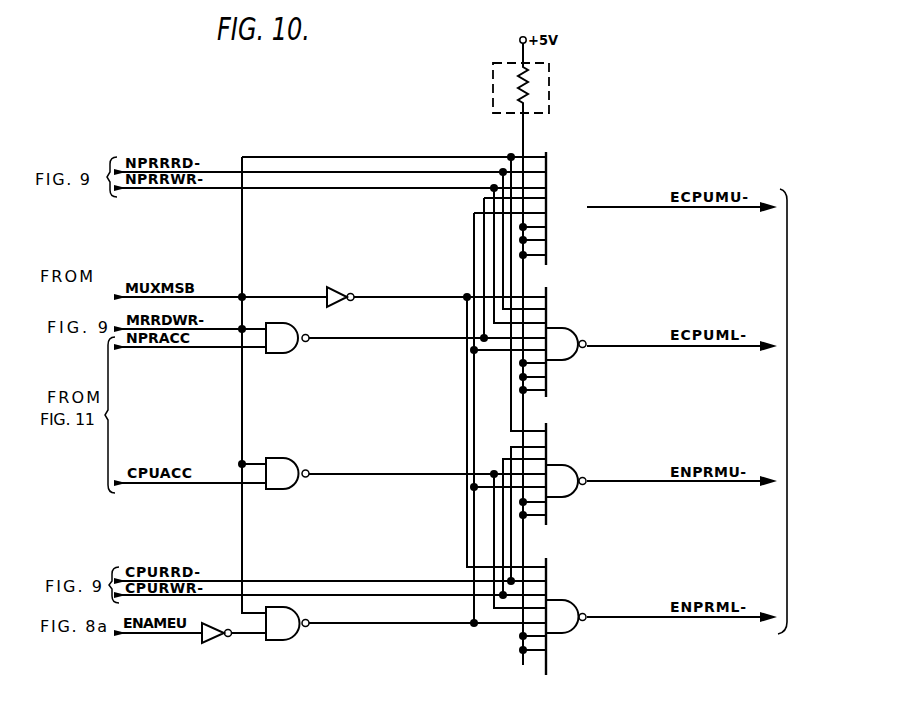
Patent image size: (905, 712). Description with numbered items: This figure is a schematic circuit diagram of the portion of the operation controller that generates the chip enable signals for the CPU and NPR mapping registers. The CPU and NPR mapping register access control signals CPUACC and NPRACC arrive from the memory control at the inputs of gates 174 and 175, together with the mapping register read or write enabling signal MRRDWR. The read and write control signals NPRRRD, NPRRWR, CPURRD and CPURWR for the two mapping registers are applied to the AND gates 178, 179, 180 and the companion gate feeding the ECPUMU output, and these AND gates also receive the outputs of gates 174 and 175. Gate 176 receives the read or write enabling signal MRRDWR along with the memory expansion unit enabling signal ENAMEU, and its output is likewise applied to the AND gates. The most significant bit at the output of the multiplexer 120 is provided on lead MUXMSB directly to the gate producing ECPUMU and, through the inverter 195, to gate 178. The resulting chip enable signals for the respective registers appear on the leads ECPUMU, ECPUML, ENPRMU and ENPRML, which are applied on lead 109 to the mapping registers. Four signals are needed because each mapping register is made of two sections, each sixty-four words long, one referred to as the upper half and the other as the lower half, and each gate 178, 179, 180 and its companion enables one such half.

The chip enable lead 109 is at (831, 411).
The multiplexer 120 is at (68, 296).
The gate 174 is at (283, 353).
The gate 175 is at (287, 489).
The gate 176 is at (575, 426).
The AND gate 178 is at (575, 327).
The AND gate 179 is at (578, 465).
The AND gate 180 is at (574, 600).
The inverter 195 is at (340, 287).